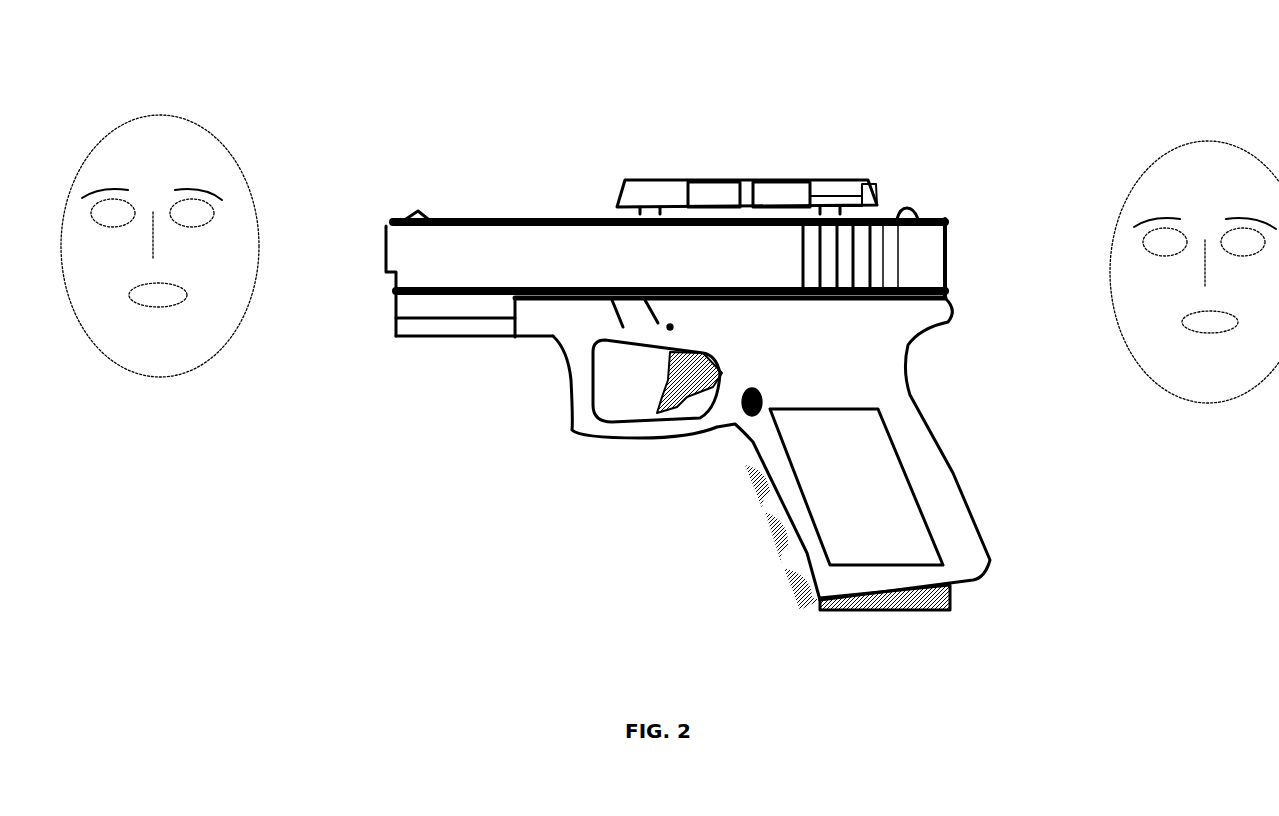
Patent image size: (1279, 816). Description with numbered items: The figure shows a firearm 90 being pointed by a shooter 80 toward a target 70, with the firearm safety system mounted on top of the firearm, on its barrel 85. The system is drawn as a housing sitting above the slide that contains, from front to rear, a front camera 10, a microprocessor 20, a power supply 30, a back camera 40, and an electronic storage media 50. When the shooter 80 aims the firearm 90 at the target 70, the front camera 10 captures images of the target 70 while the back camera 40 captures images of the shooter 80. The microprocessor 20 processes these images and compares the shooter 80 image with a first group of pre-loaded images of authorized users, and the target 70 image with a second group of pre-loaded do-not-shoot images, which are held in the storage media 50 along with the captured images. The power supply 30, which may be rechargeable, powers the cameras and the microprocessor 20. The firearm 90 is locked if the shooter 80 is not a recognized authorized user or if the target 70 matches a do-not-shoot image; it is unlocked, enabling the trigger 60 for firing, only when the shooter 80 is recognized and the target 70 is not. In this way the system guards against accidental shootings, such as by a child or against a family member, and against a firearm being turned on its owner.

The front camera 10 is at (623, 190).
The microprocessor 20 is at (701, 180).
The power supply 30 is at (777, 180).
The back camera 40 is at (878, 190).
The electronic storage media 50 is at (860, 204).
The trigger 60 is at (670, 378).
The target 70 is at (158, 378).
The shooter 80 is at (1210, 403).
The barrel 85 is at (527, 217).
The firearm 90 is at (895, 614).